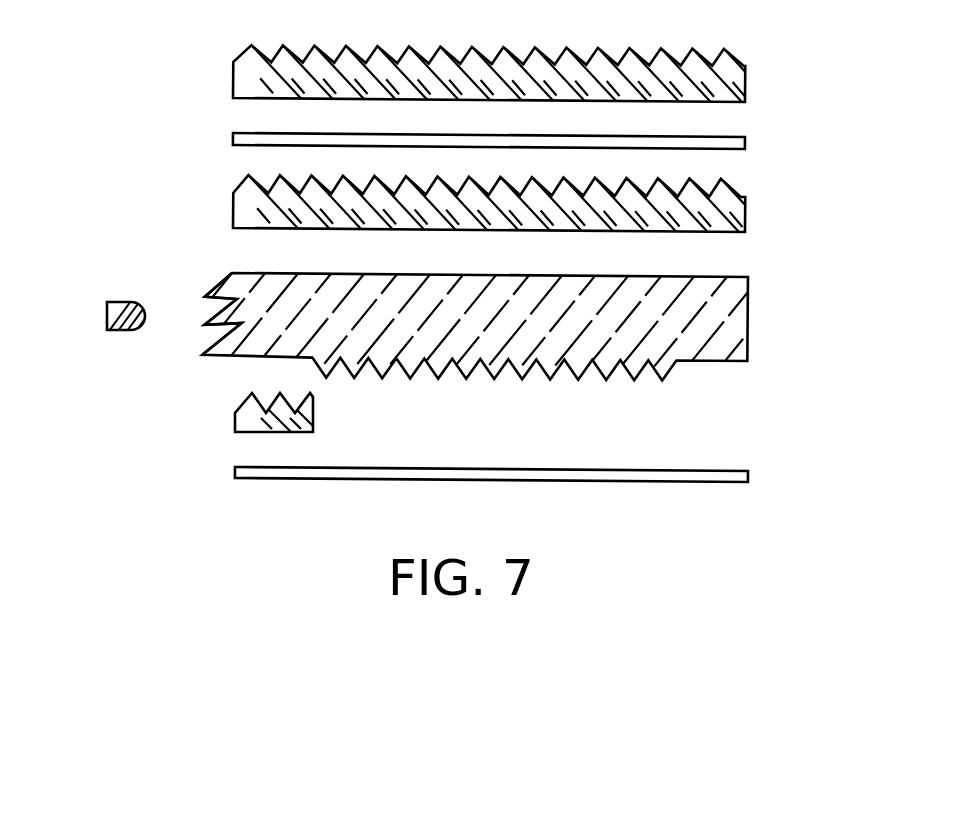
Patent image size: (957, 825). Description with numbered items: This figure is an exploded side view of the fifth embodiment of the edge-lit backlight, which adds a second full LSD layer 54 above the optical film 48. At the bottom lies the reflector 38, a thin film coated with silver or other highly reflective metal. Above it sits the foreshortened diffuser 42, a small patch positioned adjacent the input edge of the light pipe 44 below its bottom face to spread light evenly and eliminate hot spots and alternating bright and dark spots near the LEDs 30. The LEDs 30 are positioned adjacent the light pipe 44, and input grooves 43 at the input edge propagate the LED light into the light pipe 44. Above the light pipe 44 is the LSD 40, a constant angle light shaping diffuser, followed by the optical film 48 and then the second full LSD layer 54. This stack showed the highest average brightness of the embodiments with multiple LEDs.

The LED 30 is at (130, 303).
The reflector 38 is at (268, 478).
The LSD 40 is at (235, 193).
The foreshortened diffuser 42 is at (235, 413).
The input grooves 43 is at (232, 273).
The light pipe 44 is at (752, 322).
The optical film 48 is at (252, 132).
The second full LSD layer 54 is at (243, 58).